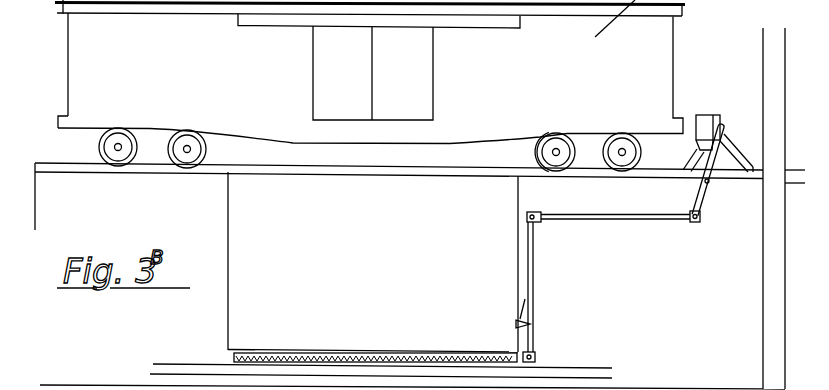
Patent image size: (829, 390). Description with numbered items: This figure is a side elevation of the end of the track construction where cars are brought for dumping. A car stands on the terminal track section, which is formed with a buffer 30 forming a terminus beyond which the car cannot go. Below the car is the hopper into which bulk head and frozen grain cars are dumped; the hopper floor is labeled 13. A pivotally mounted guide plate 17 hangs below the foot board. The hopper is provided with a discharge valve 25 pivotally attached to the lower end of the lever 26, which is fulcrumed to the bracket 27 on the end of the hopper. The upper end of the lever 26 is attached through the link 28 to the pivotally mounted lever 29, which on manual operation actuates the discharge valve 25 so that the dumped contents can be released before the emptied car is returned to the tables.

The pit floor 13 is at (595, 367).
The guide plate 17 is at (497, 268).
The discharge valve 25 is at (305, 332).
The lever 26 is at (533, 344).
The bracket 27 is at (527, 298).
The link 28 is at (641, 219).
The lever 29 is at (706, 204).
The buffers 30 is at (731, 101).